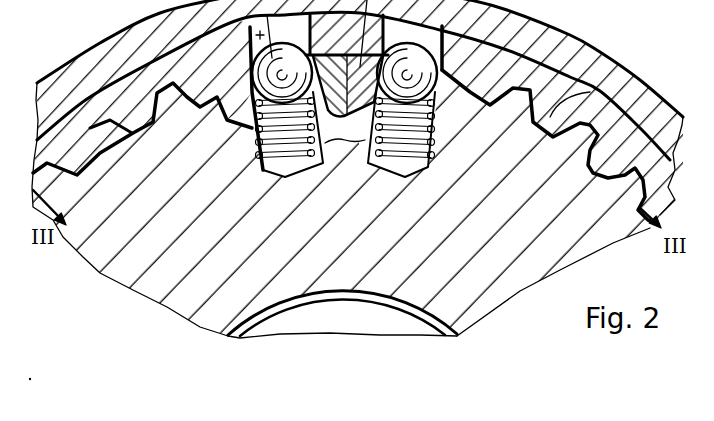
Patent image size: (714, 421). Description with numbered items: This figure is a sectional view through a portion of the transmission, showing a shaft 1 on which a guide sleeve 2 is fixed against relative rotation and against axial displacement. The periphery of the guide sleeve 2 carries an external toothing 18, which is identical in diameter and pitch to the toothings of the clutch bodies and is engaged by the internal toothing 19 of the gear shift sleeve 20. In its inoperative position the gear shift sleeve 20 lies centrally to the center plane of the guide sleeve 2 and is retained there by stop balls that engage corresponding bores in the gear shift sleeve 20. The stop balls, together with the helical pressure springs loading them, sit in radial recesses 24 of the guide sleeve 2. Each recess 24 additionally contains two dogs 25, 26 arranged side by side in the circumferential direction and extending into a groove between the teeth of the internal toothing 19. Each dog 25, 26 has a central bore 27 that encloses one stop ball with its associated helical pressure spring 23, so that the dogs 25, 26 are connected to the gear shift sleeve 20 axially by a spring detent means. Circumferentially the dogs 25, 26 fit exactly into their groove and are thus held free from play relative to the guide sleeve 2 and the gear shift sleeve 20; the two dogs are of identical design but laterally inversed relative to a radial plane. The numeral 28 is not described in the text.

The shaft 1 is at (458, 333).
The guide sleeve 2 is at (567, 254).
The external toothing 18 is at (577, 140).
The internal toothing 19 is at (560, 93).
The gear shift sleeve 20 is at (577, 65).
The helical pressure spring 23 is at (407, 160).
The radial recess 24 is at (233, 267).
The dog 25 is at (233, 77).
The dog 26 is at (460, 50).
The central bore 27 is at (200, 110).
The wedge 28 is at (420, 117).